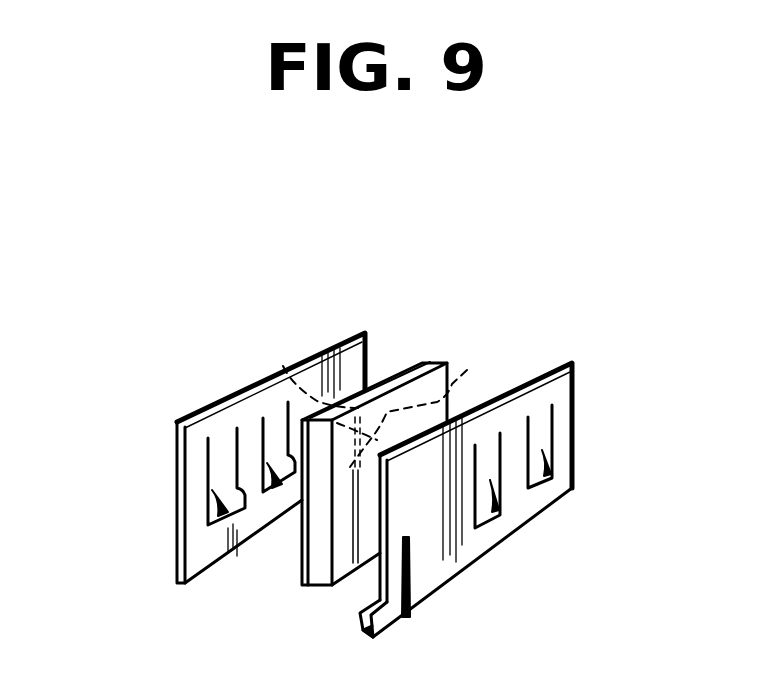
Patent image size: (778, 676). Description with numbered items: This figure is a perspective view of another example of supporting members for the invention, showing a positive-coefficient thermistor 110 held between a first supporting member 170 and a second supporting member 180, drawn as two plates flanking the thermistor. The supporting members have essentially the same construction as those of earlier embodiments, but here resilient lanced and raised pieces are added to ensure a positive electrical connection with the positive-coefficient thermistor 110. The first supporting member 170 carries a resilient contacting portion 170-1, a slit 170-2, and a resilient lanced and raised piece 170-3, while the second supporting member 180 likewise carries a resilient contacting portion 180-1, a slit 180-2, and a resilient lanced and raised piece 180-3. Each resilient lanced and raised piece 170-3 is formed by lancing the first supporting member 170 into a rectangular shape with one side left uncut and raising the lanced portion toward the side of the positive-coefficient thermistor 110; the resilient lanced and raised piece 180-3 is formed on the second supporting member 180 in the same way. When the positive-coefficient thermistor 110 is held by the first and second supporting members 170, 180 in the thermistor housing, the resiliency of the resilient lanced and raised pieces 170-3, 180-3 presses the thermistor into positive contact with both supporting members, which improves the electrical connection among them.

The positive-coefficient thermistor 110 is at (440, 362).
The first supporting member 170 is at (367, 331).
The resilient contacting portion 170-1 is at (467, 370).
The slit 170-2 is at (283, 366).
The resilient lanced and raised piece 170-3 is at (273, 436).
The second supporting member 180 is at (573, 398).
The resilient contacting portion 180-1 is at (360, 613).
The slit 180-2 is at (412, 593).
The resilient lanced and raised piece 180-3 is at (535, 458).